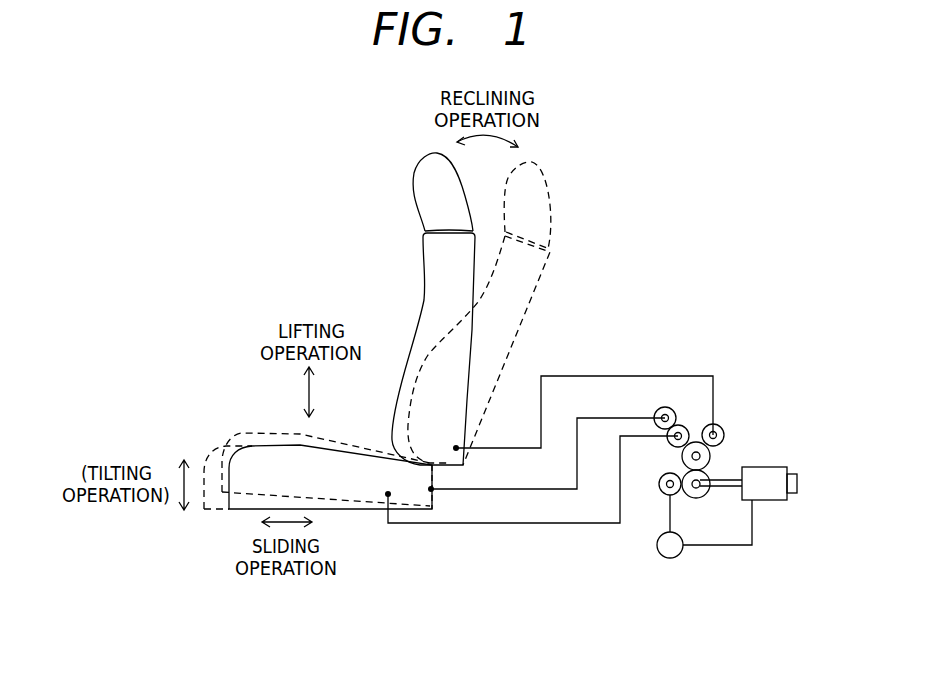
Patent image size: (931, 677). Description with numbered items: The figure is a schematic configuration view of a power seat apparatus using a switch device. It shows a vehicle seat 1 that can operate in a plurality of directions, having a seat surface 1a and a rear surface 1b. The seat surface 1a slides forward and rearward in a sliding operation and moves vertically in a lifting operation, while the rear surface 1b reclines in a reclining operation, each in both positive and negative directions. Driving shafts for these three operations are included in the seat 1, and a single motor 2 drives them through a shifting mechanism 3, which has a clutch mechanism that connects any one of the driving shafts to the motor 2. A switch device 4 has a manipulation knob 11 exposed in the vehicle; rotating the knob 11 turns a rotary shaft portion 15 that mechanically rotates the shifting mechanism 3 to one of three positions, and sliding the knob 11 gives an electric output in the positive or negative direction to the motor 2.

The vehicle seat 1 is at (414, 188).
The seat surface 1a is at (277, 445).
The rear surface 1b is at (418, 315).
The motor 2 is at (670, 558).
The shifting mechanism 3 is at (727, 453).
The switch device 4 is at (777, 467).
The manipulation knob 11 is at (792, 493).
The rotary shaft portion 15 is at (731, 488).